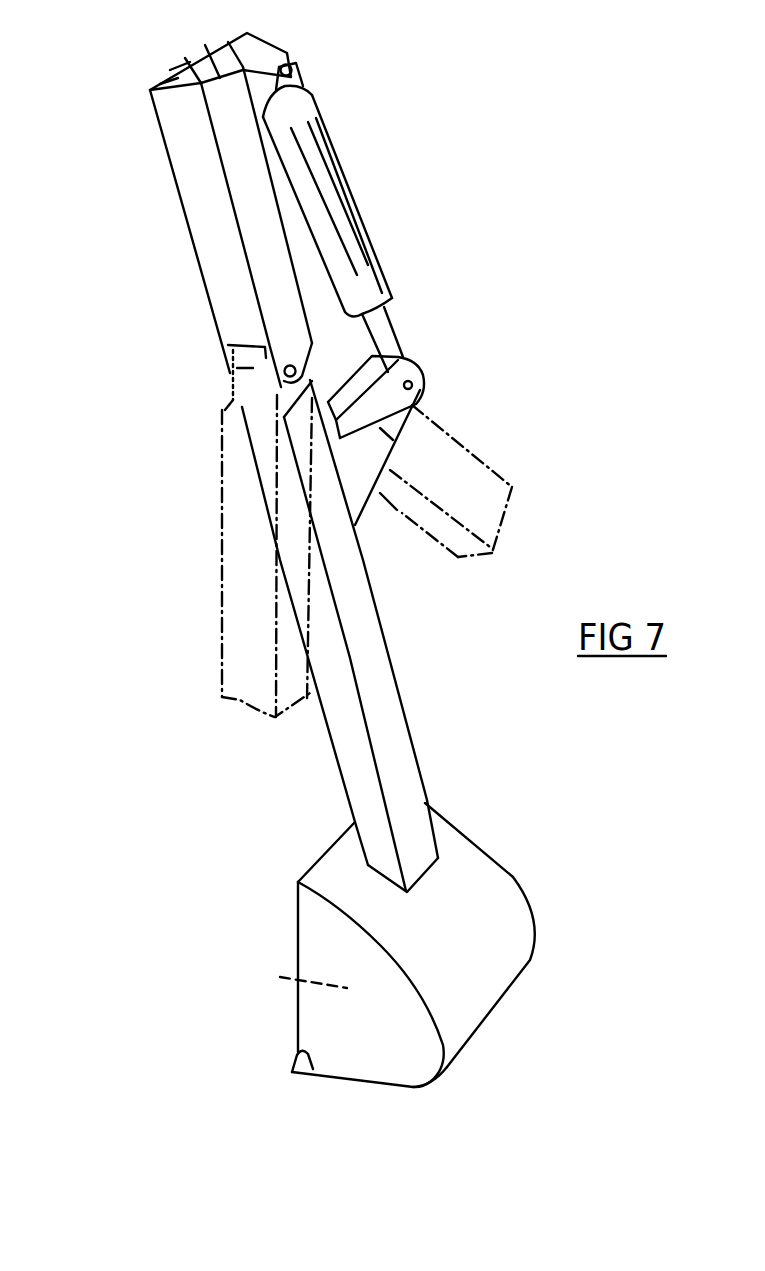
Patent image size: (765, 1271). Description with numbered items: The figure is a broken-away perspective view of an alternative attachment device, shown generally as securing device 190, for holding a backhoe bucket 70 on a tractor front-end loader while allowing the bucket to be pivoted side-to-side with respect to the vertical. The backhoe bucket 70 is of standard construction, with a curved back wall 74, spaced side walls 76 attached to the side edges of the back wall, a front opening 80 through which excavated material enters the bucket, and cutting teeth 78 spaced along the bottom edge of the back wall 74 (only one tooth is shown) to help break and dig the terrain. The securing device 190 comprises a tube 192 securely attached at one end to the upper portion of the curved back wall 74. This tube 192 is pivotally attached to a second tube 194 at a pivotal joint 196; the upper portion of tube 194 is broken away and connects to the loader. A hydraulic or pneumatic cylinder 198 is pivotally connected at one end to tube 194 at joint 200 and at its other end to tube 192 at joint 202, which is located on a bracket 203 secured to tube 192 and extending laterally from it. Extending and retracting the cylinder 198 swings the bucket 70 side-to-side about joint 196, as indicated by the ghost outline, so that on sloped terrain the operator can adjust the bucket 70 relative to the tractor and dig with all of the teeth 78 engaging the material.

The backhoe bucket 70 is at (389, 996).
The back wall 74 is at (481, 964).
The side walls 76 is at (386, 1056).
The cutting teeth 78 is at (297, 1073).
The front opening 80 is at (280, 977).
The securing device 190 is at (590, 212).
The tube 192 is at (508, 453).
The tube 194 is at (193, 255).
The joint 196 is at (230, 373).
The hydraulic or pneumatic cylinder 198 is at (367, 220).
The joint 200 is at (294, 70).
The joint 202 is at (430, 380).
The bracket 203 is at (393, 470).